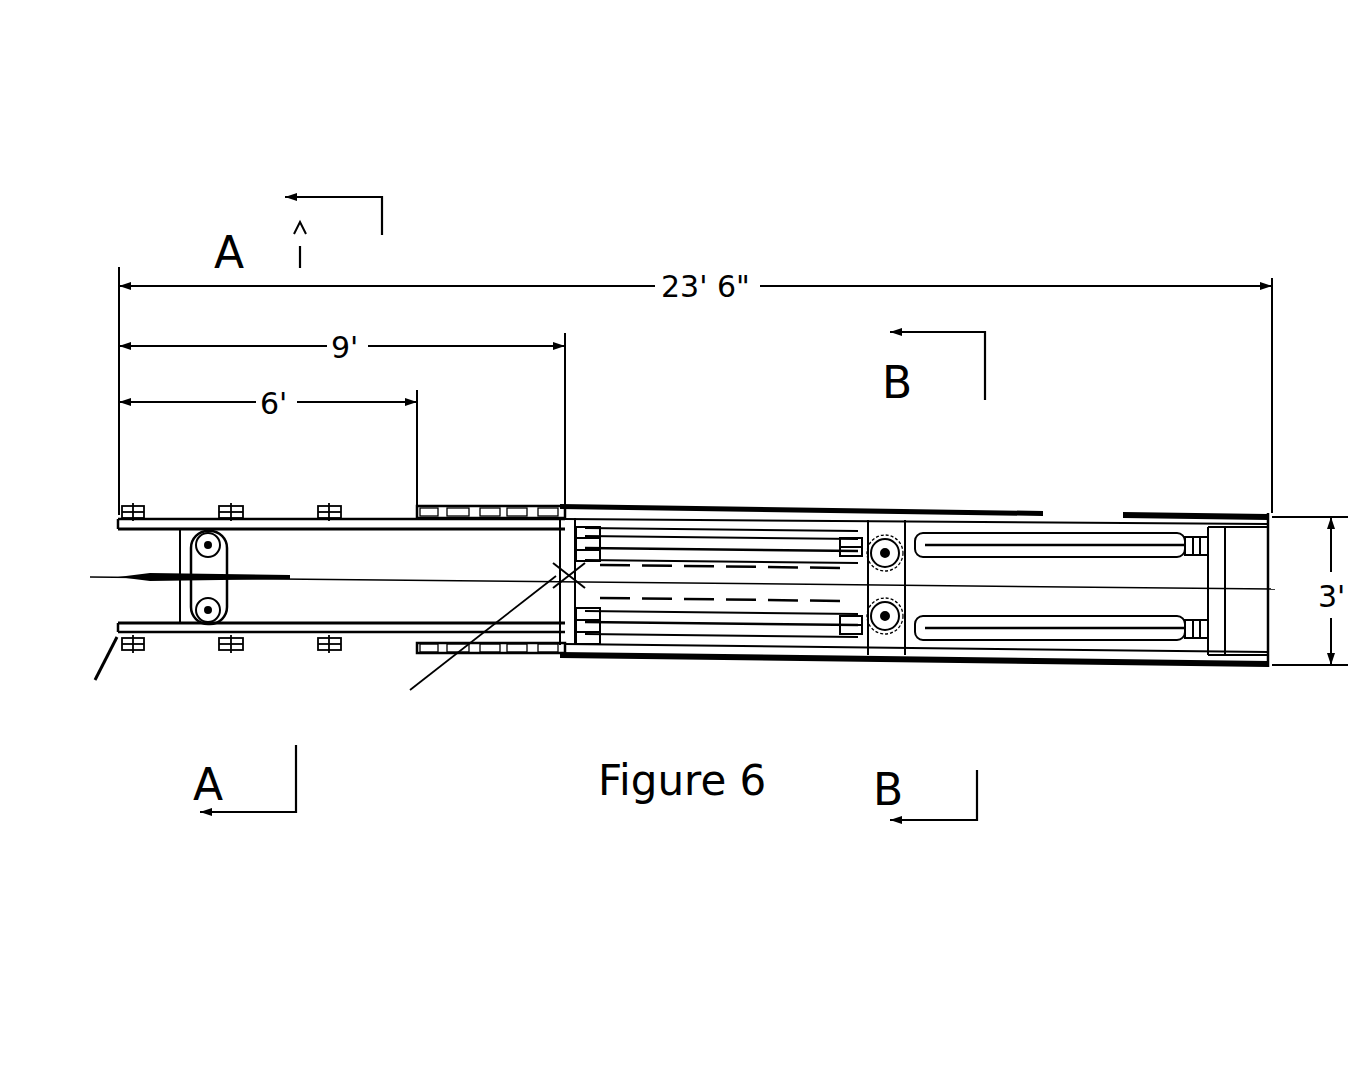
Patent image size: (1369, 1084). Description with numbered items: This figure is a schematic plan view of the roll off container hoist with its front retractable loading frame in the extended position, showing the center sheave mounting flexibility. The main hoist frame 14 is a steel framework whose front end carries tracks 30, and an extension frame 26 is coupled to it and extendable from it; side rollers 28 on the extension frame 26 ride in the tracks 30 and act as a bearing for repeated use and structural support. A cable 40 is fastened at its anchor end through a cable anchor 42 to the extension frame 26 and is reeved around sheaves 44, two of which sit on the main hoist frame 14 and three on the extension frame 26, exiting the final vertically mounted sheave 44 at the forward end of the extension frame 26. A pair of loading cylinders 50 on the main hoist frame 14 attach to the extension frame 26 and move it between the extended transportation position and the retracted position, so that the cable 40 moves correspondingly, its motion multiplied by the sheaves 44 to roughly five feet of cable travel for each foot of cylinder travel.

The main hoist frame 14 is at (880, 505).
The extension frame 26 is at (379, 569).
The side rollers 28 is at (320, 506).
The tracks 30 is at (595, 505).
The cable 40 is at (366, 518).
The cable anchor 42 is at (413, 687).
The sheaves 44 is at (205, 538).
The loading cylinders 50 is at (996, 540).